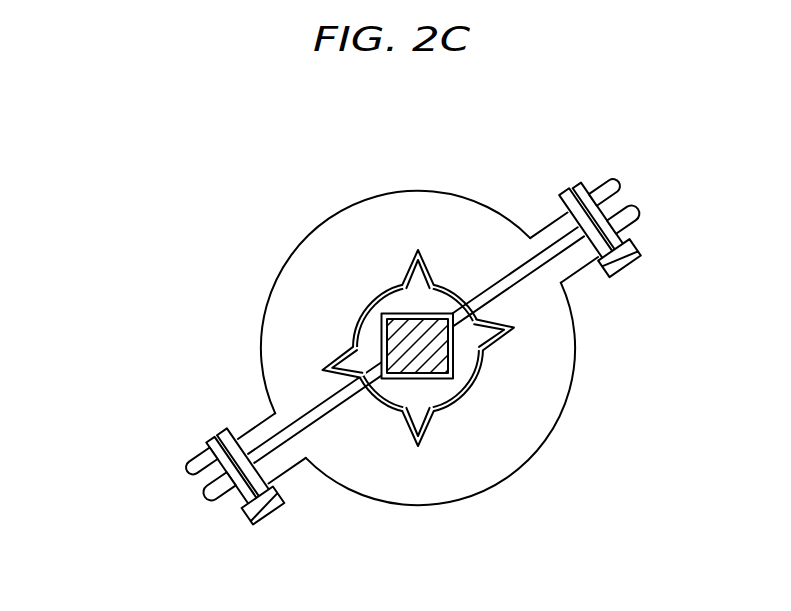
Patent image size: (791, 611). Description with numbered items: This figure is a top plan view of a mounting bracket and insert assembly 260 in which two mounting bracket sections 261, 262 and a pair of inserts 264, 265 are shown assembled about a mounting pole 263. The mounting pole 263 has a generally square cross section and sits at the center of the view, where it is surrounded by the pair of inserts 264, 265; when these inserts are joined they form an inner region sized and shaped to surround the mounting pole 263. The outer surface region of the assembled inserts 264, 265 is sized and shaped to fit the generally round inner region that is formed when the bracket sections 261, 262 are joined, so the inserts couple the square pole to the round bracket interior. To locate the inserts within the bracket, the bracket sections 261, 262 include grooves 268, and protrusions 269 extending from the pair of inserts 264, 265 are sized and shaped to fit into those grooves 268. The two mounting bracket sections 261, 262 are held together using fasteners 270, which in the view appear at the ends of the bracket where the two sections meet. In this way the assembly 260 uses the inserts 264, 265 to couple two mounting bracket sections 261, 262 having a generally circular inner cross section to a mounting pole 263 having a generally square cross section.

The transducer clamp assembly 260 is at (668, 182).
The mounting bracket section 261 is at (433, 204).
The mounting bracket section 262 is at (564, 394).
The mounting pole 263 is at (467, 380).
The insert 264 is at (371, 340).
The insert 265 is at (403, 395).
The grooves 268 is at (403, 272).
The protrusions 269 is at (417, 248).
The fasteners 270 is at (569, 200).